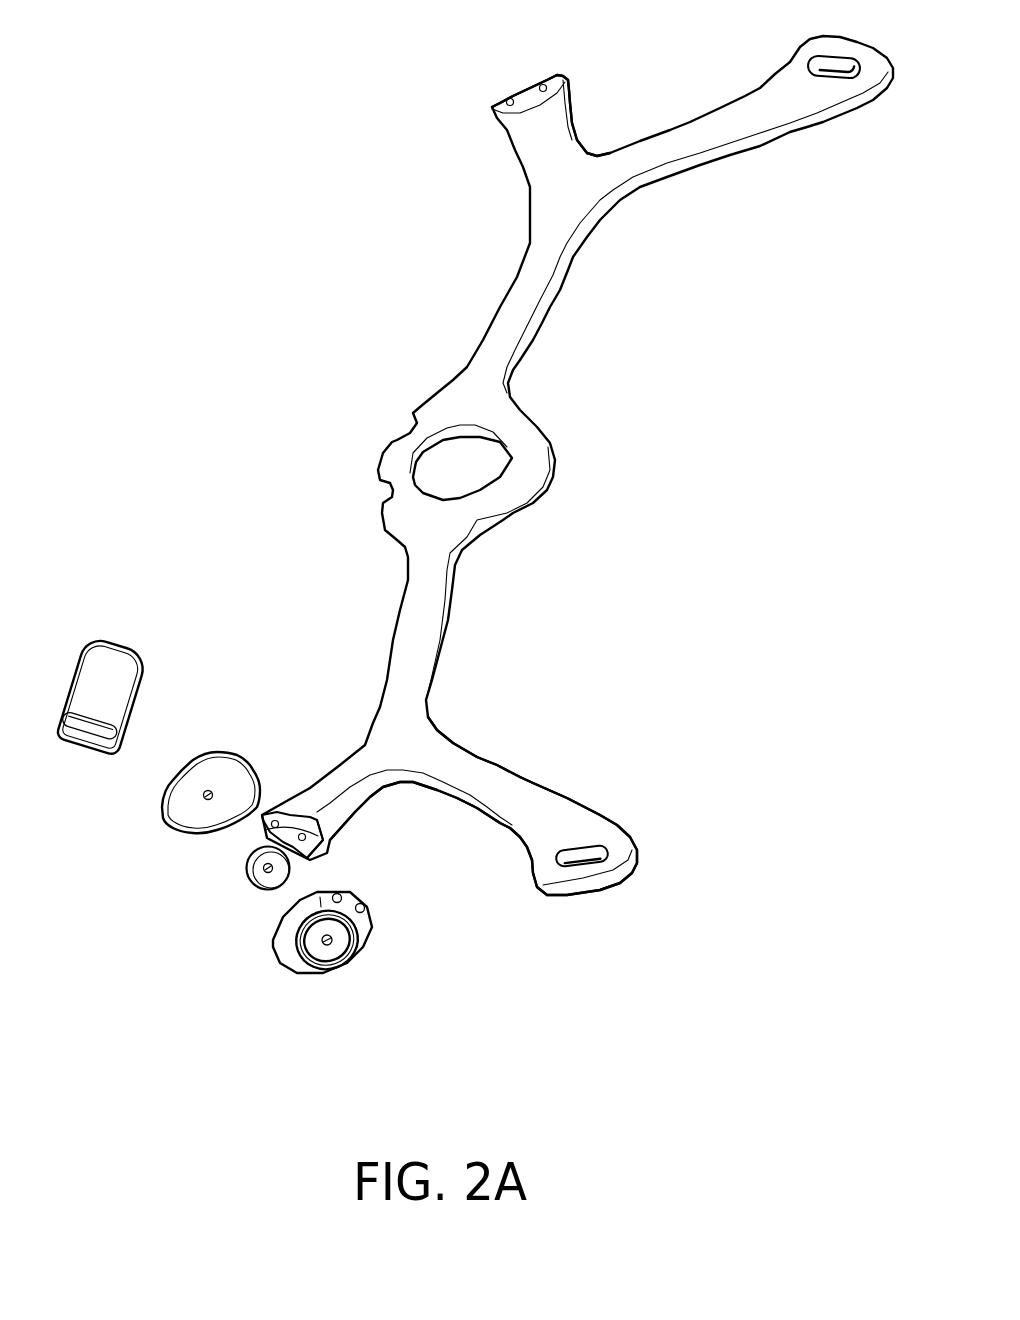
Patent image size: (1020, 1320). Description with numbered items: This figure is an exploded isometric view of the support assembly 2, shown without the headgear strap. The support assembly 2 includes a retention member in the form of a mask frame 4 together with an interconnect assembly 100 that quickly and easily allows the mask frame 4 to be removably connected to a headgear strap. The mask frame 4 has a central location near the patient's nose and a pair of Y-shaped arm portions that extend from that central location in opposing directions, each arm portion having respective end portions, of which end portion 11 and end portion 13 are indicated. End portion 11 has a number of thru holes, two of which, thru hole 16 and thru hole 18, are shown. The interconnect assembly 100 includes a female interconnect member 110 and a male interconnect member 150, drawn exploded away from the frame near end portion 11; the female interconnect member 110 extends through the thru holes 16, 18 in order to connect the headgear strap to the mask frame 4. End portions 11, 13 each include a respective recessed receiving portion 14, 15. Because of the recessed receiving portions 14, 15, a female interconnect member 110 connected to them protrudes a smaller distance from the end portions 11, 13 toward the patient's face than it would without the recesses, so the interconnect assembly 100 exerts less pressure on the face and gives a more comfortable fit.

The interconnect assembly 100 is at (162, 1048).
The support assembly 2 is at (592, 453).
The mask frame 4 is at (503, 754).
The end portion 11 is at (292, 803).
The end portion 13 is at (533, 132).
The recessed receiving portion 14 is at (293, 822).
The recessed receiving portion 15 is at (524, 96).
The thru hole 16 is at (262, 839).
The thru hole 18 is at (320, 827).
The female interconnect member 110 is at (214, 939).
The male interconnect member 150 is at (174, 647).